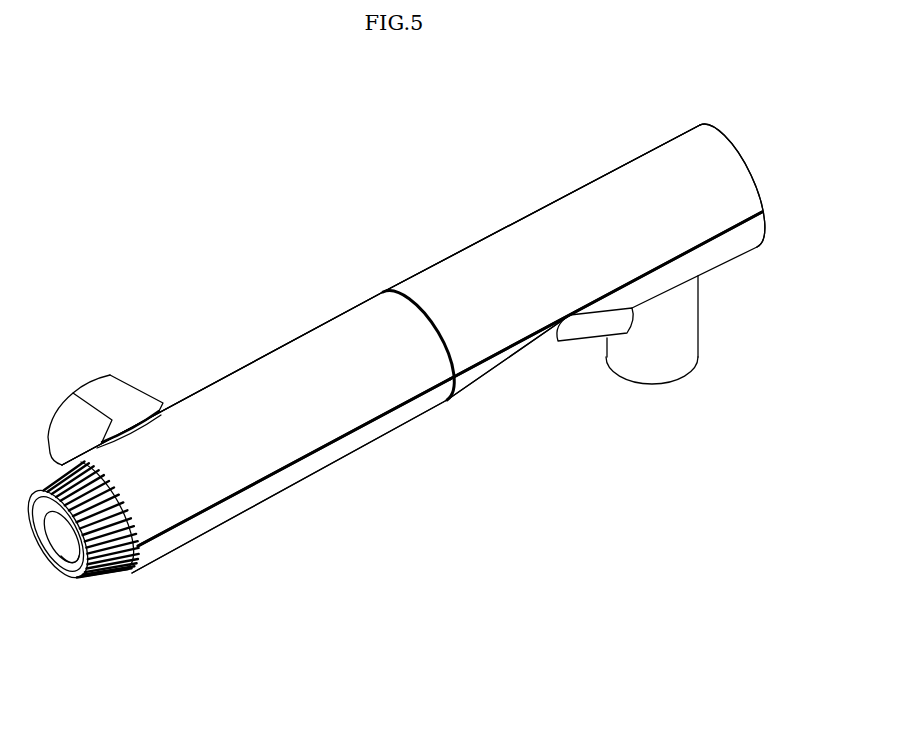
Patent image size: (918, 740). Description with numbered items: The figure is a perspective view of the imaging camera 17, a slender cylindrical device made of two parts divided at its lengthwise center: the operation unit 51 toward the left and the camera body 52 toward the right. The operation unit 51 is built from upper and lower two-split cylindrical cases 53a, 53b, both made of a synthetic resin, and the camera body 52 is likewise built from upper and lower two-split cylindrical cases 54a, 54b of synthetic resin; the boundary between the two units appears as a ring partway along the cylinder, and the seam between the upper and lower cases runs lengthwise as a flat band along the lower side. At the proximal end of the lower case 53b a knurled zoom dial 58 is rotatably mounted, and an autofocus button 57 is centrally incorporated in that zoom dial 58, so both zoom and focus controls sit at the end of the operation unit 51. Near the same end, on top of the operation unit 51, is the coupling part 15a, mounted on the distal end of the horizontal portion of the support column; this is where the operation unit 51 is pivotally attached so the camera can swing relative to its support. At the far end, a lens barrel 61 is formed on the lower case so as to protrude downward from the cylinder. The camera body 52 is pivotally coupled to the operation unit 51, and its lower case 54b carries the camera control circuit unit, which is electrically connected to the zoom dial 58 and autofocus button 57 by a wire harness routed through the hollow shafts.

The coupling part 15a is at (120, 400).
The imaging camera 17 is at (357, 282).
The operation unit 51 is at (252, 387).
The camera body 52 is at (522, 233).
The upper case 53a is at (220, 393).
The lower case 53b is at (383, 428).
The upper case 54a is at (463, 258).
The lower case 54b is at (510, 358).
The autofocus button 57 is at (67, 540).
The zoom dial 58 is at (107, 548).
The lens barrel 61 is at (676, 333).